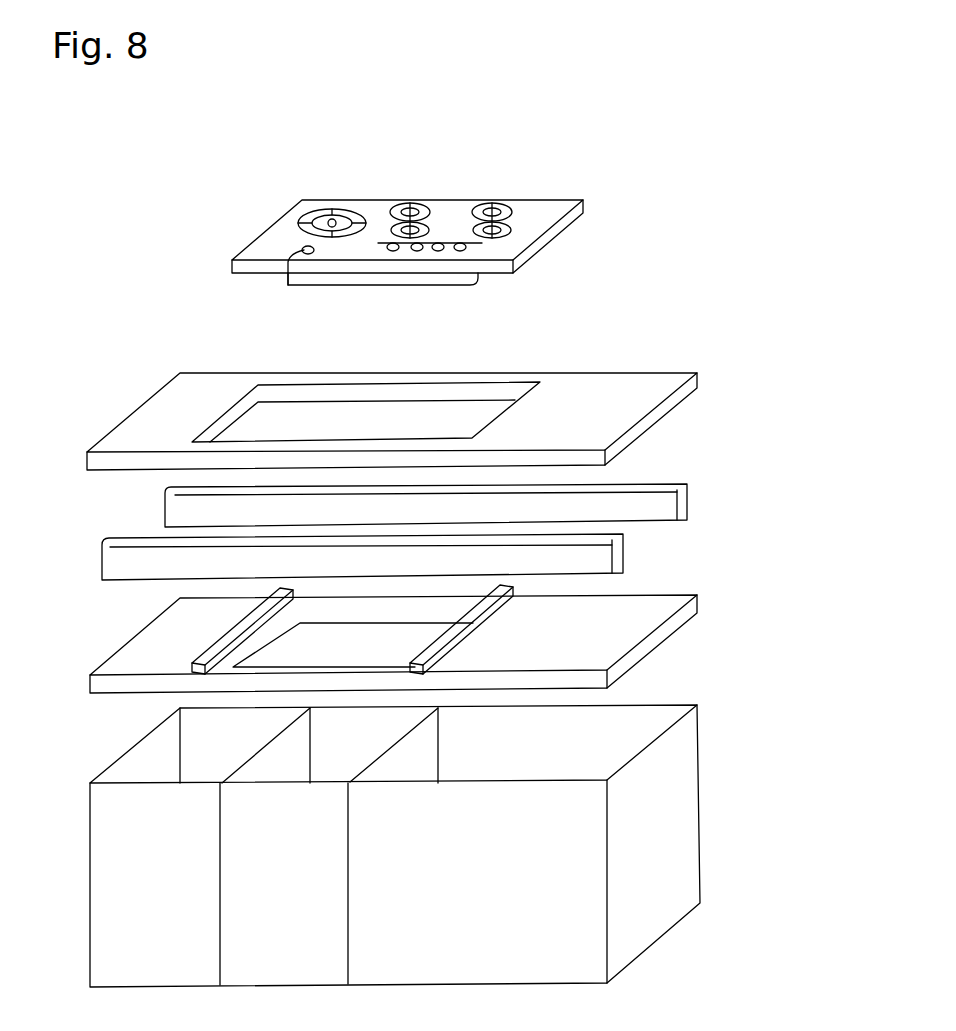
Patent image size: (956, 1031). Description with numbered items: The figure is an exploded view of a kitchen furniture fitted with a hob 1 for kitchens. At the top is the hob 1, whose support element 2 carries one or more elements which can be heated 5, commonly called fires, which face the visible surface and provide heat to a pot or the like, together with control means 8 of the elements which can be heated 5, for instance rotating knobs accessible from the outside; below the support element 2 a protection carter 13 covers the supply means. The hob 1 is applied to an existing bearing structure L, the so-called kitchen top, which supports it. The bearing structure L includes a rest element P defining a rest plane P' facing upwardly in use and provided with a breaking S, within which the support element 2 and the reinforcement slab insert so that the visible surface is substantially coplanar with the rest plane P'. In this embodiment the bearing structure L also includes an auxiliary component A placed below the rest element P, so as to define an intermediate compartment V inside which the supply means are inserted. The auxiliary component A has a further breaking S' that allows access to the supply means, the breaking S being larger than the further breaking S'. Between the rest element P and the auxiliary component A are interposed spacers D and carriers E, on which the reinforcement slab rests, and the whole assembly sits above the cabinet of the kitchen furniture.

The hob 1 is at (553, 157).
The support element 2 is at (520, 232).
The elements which can be heated 5 is at (404, 238).
The control means 8 is at (378, 243).
The protection carter 13 is at (422, 281).
The bearing structure L is at (88, 428).
The rest plane P' is at (392, 386).
The rest element P is at (418, 421).
The breaking S is at (366, 380).
The intermediate compartment V is at (133, 517).
The spacers D is at (600, 558).
The auxiliary component A is at (643, 618).
The further breaking S' is at (353, 643).
The carriers E is at (228, 640).